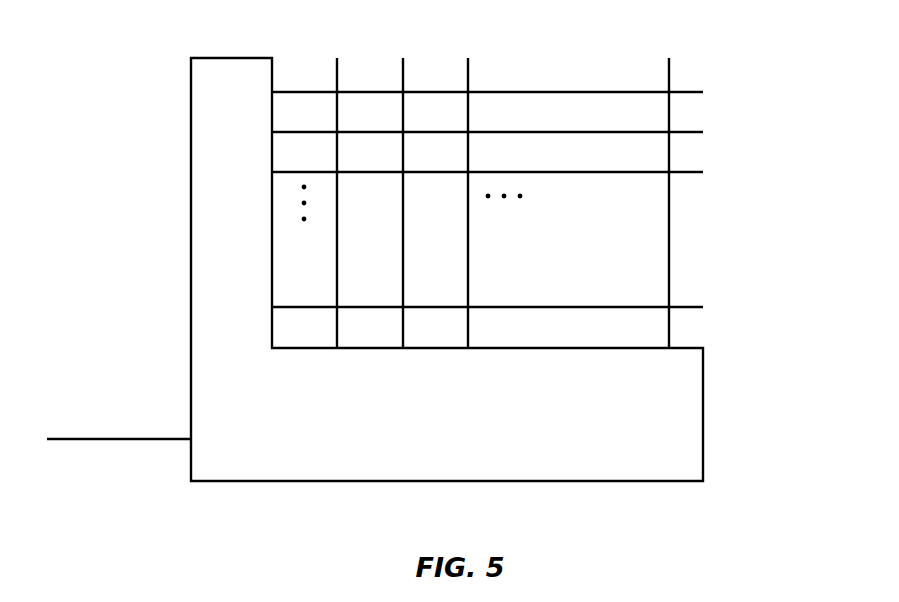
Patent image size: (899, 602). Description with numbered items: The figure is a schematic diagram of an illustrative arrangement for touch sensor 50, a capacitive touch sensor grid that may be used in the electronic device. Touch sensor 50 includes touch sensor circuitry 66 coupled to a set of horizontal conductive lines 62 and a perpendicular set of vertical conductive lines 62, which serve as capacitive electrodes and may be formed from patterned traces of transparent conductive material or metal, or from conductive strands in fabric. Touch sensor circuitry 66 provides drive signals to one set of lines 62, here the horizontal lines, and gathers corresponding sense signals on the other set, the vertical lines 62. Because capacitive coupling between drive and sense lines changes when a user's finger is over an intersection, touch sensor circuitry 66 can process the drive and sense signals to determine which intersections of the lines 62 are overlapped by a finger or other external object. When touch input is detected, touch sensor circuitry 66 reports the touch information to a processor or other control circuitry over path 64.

The touch sensor 50 is at (503, 284).
The conductive lines 62 is at (583, 132).
The path 64 is at (107, 440).
The touch sensor circuitry 66 is at (447, 444).